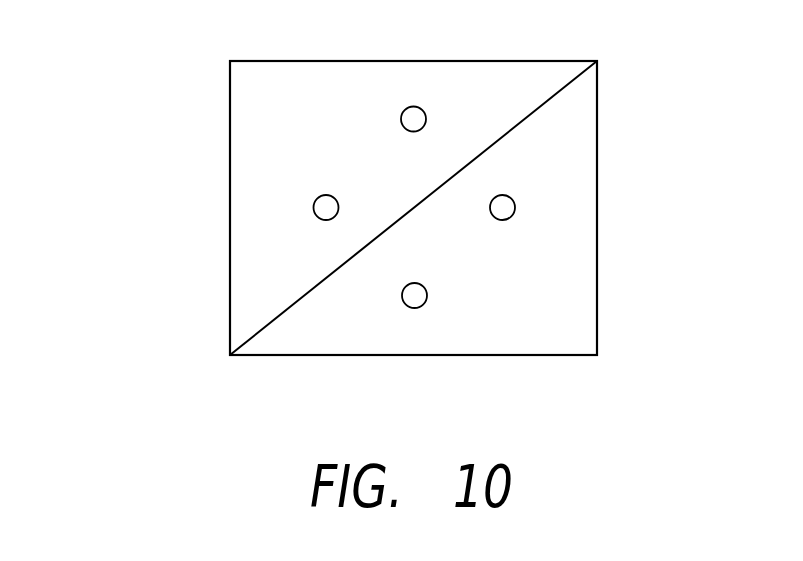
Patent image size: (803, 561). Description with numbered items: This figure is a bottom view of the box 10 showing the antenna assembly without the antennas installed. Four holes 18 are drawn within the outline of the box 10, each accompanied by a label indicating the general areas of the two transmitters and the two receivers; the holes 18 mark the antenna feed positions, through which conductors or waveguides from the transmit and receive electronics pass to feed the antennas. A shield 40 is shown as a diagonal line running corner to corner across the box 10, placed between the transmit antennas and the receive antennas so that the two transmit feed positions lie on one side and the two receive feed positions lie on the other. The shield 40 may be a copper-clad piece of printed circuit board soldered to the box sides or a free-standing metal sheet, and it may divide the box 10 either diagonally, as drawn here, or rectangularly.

The box 10 is at (216, 191).
The holes 18 is at (405, 110).
The shield 40 is at (285, 313).